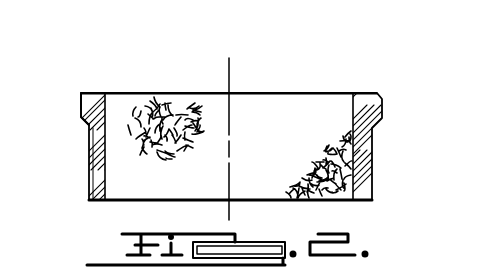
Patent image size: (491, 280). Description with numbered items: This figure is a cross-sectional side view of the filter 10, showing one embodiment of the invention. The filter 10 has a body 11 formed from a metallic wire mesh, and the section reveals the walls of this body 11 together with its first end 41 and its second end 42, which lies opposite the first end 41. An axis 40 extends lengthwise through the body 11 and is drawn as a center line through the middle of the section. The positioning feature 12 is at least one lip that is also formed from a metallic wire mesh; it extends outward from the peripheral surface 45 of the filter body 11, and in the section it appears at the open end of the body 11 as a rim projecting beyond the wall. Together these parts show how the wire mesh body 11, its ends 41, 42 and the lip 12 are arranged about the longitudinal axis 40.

The filter 10 is at (374, 68).
The body 11 is at (90, 190).
The positioning feature 12 is at (80, 107).
The axis 40 is at (231, 76).
The first end 41 is at (297, 95).
The second end 42 is at (125, 200).
The peripheral surface 45 is at (84, 152).